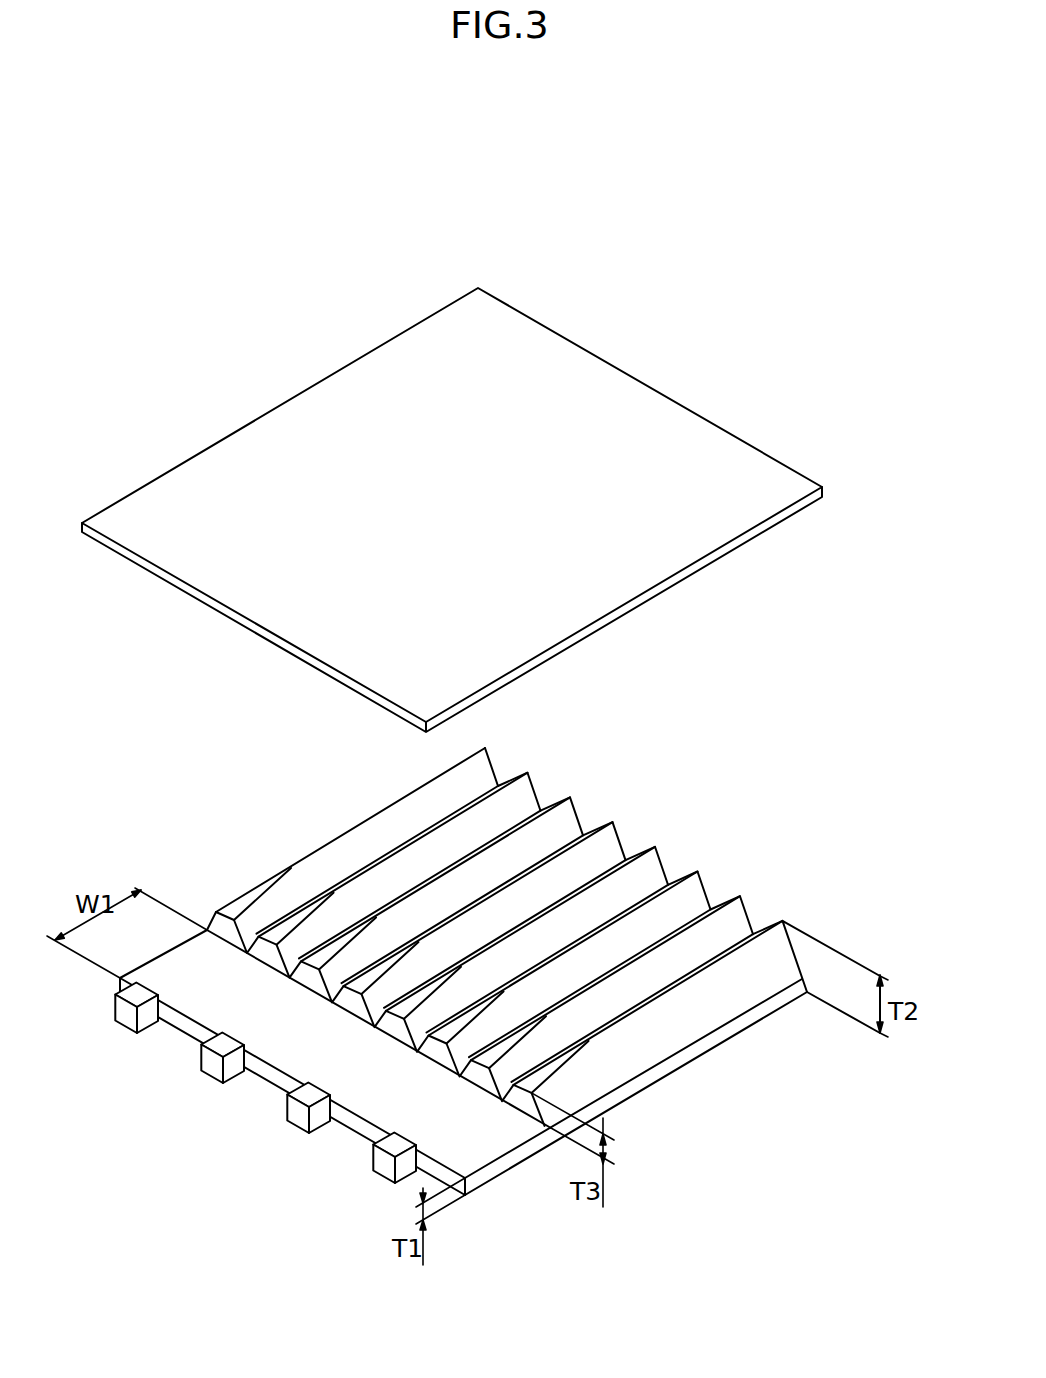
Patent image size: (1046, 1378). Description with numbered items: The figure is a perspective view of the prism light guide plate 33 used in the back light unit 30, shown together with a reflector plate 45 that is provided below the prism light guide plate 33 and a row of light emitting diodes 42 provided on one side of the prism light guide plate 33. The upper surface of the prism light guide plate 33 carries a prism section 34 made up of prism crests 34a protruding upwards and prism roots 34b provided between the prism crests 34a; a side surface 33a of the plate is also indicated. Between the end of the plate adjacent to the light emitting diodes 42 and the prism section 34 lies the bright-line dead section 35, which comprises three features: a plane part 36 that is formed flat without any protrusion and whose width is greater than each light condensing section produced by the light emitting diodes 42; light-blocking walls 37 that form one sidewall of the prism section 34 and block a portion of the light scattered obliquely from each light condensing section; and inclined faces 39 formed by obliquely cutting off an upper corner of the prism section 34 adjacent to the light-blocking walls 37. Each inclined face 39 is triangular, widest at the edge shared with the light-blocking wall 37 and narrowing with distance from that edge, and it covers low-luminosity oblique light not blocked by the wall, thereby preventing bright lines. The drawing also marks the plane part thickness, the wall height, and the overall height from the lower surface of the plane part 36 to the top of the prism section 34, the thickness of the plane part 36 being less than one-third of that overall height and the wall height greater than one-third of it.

The back light unit 30 is at (802, 272).
The prism light guide plate 33 is at (650, 747).
The light exit side surface of light guide plate 33a is at (682, 1066).
The prism section 34 is at (737, 818).
The prism crests 34a is at (630, 858).
The prism roots 34b is at (640, 883).
The bright-line dead section 35 is at (219, 792).
The plane part 36 is at (200, 968).
The light-blocking walls 37 is at (207, 930).
The inclined faces 39 is at (252, 898).
The light emitting diodes 42 is at (213, 1066).
The reflector plate 45 is at (587, 368).